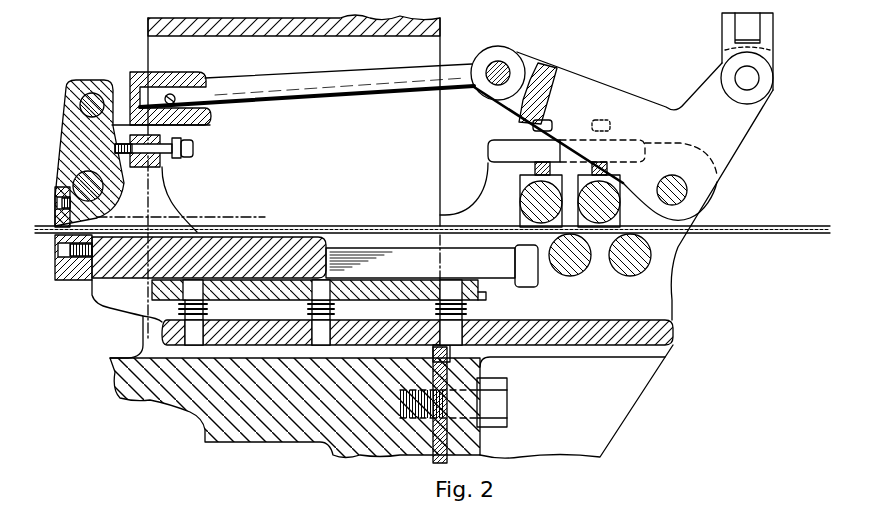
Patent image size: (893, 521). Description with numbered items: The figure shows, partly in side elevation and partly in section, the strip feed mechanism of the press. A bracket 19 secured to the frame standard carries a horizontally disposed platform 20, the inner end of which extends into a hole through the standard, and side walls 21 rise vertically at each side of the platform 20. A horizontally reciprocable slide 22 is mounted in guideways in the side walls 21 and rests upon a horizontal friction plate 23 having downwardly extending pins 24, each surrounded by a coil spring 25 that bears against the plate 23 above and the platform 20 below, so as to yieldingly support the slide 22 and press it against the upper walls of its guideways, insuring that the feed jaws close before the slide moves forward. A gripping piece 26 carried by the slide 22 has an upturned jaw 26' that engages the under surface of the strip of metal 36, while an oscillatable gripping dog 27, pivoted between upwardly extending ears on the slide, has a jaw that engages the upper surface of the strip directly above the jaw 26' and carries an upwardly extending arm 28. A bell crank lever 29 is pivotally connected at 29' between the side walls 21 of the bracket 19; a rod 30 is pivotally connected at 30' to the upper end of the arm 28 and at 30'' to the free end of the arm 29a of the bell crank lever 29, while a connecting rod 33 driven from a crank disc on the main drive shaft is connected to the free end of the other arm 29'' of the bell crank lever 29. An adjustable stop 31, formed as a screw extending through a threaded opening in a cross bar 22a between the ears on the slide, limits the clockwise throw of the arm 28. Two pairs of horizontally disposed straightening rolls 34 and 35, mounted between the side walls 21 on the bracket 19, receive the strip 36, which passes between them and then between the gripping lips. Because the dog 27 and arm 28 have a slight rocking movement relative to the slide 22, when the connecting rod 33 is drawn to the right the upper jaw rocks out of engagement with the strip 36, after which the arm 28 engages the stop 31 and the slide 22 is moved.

The bracket 19 is at (617, 398).
The platform 20 is at (500, 328).
The side walls 21 is at (370, 243).
The slide 22 is at (257, 240).
The cross bar 22a is at (166, 170).
The friction plate 23 is at (498, 265).
The pins 24 is at (322, 332).
The coil spring 25 is at (307, 307).
The gripping piece 26 is at (73, 269).
The upturned jaw 26' is at (56, 244).
The oscillatable gripping dog 27 is at (45, 197).
The arm 28 is at (73, 138).
The bell crank lever 29 is at (623, 186).
The pivot of bell crank lever 29' is at (710, 190).
The arm of bell crank lever 29'' is at (757, 91).
The arm of bell crank lever 29a is at (563, 97).
The rod 30 is at (332, 76).
The pivotal connection of rod to arm 30' is at (145, 92).
The pivotal connection of rod to bell crank arm 30'' is at (517, 57).
The adjustable stop 31 is at (193, 148).
The connecting rod 33 is at (757, 30).
The straightening rolls 34 is at (520, 203).
The straightening rolls 35 is at (572, 278).
The strip of metal 36 is at (742, 233).